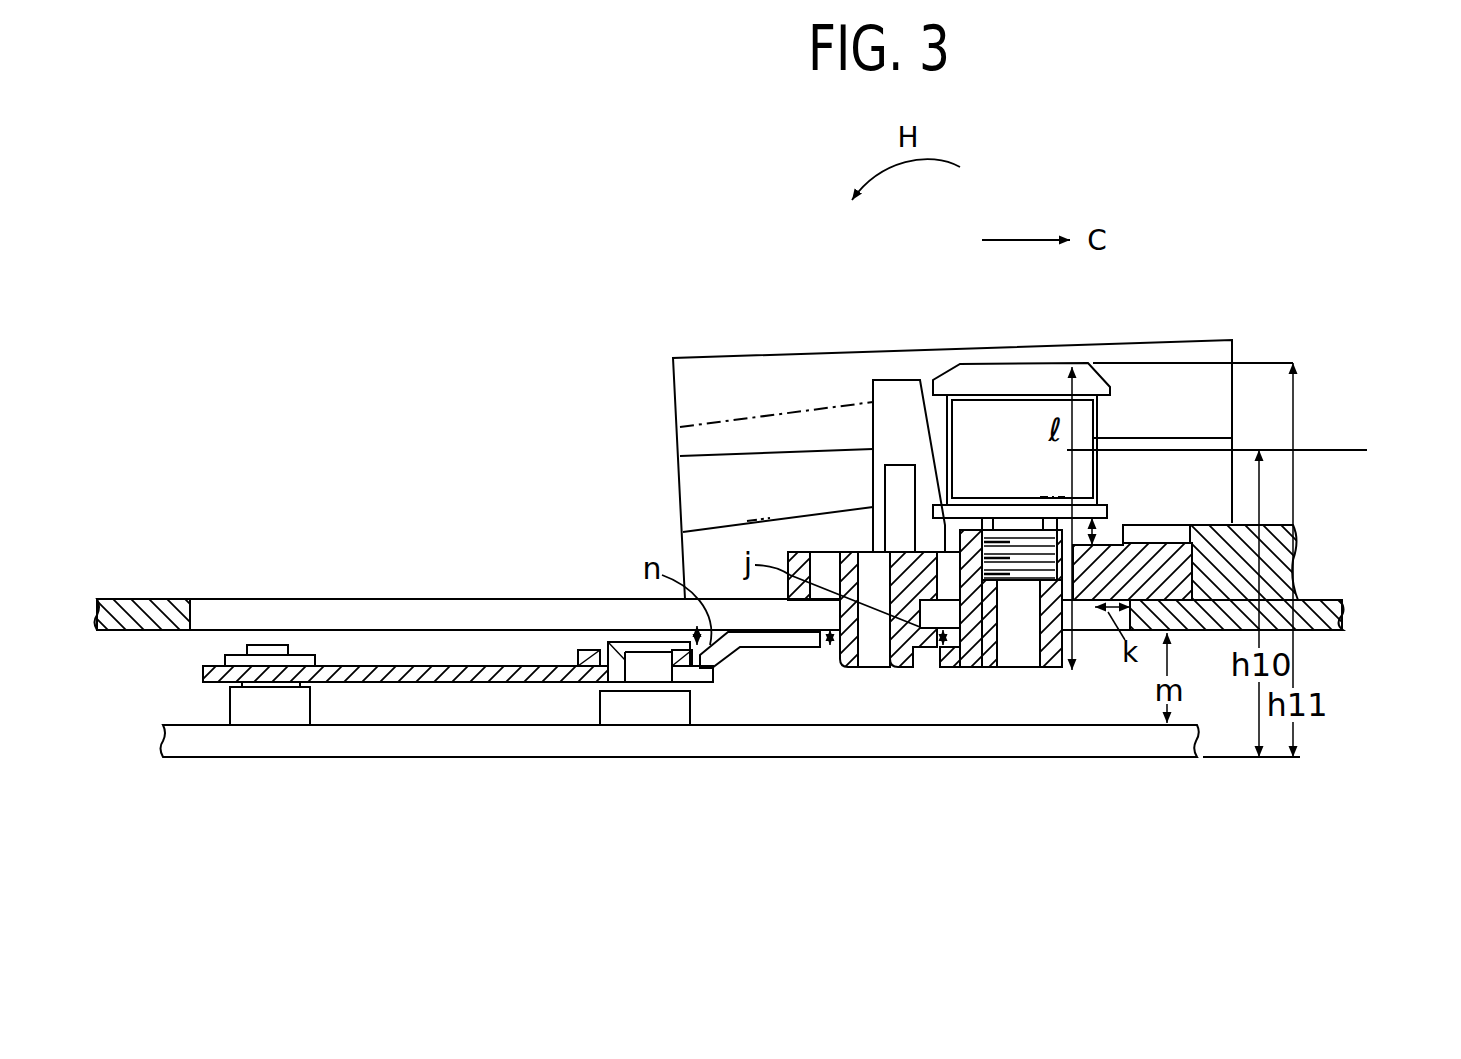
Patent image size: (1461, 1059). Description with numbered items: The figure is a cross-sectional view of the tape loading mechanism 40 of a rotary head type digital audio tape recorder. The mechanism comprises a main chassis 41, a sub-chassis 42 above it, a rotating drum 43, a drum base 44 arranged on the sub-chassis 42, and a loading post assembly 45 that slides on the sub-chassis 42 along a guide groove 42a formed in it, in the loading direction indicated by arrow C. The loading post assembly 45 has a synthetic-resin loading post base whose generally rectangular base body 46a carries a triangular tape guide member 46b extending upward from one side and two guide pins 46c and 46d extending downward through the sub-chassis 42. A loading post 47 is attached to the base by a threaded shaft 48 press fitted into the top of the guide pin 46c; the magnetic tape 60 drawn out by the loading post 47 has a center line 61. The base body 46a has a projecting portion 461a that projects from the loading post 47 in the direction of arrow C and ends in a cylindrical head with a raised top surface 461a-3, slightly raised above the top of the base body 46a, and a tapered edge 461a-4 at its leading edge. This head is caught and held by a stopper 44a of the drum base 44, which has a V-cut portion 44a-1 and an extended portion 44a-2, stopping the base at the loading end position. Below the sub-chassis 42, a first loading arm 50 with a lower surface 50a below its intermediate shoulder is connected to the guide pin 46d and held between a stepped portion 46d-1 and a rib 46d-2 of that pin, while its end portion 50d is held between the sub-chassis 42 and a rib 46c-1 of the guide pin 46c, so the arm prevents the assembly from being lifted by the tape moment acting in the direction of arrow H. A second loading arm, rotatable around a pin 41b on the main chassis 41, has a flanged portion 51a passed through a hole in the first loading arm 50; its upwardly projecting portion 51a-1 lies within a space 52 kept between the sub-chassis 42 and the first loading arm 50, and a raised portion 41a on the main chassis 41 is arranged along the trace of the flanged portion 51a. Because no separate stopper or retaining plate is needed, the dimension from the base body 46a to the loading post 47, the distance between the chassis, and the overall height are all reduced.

The tape loading mechanism 40 is at (1143, 207).
The main chassis 41 is at (220, 758).
The raised portion 41a is at (623, 715).
The pin 41b is at (242, 705).
The sub-chassis 42 is at (138, 598).
The guide groove 42a is at (273, 598).
The rotating drum 43 is at (657, 363).
The drum base 44 is at (1303, 573).
The stopper 44a is at (1207, 570).
The V-cut portion 44a-1 is at (1188, 610).
The extended portion 44a-2 is at (1143, 525).
The loading post assembly 45 is at (857, 437).
The base body 46a is at (800, 512).
The tape guide member 46b is at (893, 390).
The guide pin 46c is at (1047, 668).
The rib 46c-1 is at (978, 645).
The guide pin 46d is at (905, 668).
The stepped portion 46d-1 is at (925, 645).
The rib 46d-2 is at (828, 648).
The loading post 47 is at (953, 378).
The threaded shaft 48 is at (1012, 635).
The first loading arm 50 is at (753, 638).
The lower surface 50a is at (710, 672).
The end portion 50d is at (950, 658).
The flanged portion 51a is at (600, 680).
The projecting portion 51a-1 is at (615, 645).
The space 52 is at (575, 643).
The magnetic tape 60 is at (985, 497).
The center line 61 is at (1347, 452).
The projecting portion 461a is at (1100, 613).
The raised top surface 461a-3 is at (1158, 537).
The tapered edge 461a-4 is at (1193, 535).